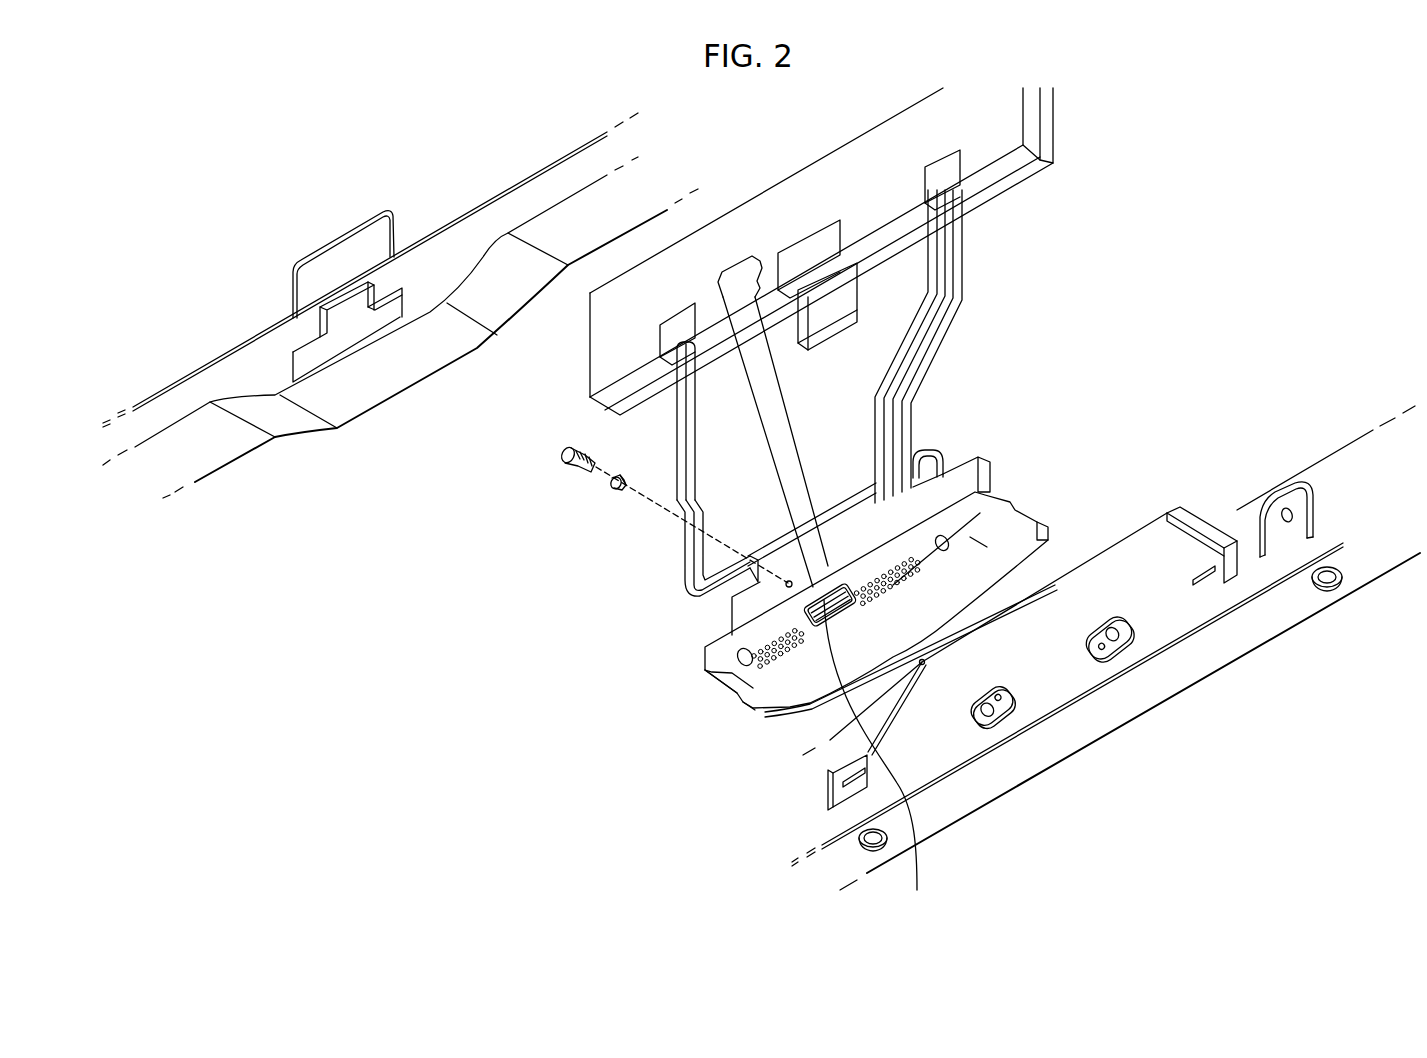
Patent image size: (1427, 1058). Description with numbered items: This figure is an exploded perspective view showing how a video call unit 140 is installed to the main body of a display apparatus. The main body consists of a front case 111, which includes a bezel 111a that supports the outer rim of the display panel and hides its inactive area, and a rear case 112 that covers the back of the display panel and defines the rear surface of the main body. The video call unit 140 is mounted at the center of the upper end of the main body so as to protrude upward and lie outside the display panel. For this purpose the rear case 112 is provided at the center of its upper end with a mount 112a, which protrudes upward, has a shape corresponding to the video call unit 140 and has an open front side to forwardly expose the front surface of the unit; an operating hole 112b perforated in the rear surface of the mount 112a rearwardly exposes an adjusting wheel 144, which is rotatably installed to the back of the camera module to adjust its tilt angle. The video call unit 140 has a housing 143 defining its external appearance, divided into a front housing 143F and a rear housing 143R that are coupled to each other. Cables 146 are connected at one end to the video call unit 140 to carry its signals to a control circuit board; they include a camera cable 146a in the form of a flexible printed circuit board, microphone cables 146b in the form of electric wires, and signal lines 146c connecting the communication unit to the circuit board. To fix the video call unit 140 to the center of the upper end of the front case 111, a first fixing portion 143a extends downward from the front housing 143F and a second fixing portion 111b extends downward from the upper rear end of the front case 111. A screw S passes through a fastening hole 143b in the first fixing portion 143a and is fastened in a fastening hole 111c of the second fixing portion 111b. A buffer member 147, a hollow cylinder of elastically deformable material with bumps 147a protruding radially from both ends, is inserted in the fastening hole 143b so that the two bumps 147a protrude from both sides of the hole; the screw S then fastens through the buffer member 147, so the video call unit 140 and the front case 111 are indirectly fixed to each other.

The front case 111 is at (1297, 603).
The bezel 111a is at (1320, 480).
The second fixing portion 111b is at (1182, 540).
The fastening hole 111c is at (1022, 718).
The rear case 112 is at (208, 440).
The mount 112a is at (415, 375).
The operating hole 112b is at (352, 335).
The video call unit 140 is at (718, 693).
The housing 143 is at (712, 845).
The first fixing portion 143a is at (967, 478).
The fastening hole 143b is at (732, 623).
The front housing 143F is at (755, 700).
The rear housing 143R is at (738, 692).
The adjusting wheel 144 is at (878, 759).
The cables 146 is at (913, 346).
The camera cable 146a is at (787, 447).
The microphone cables 146b is at (690, 423).
The signal lines 146c is at (957, 272).
The buffer member 147 is at (661, 535).
The bumps 147a is at (612, 487).
The screw S is at (565, 462).